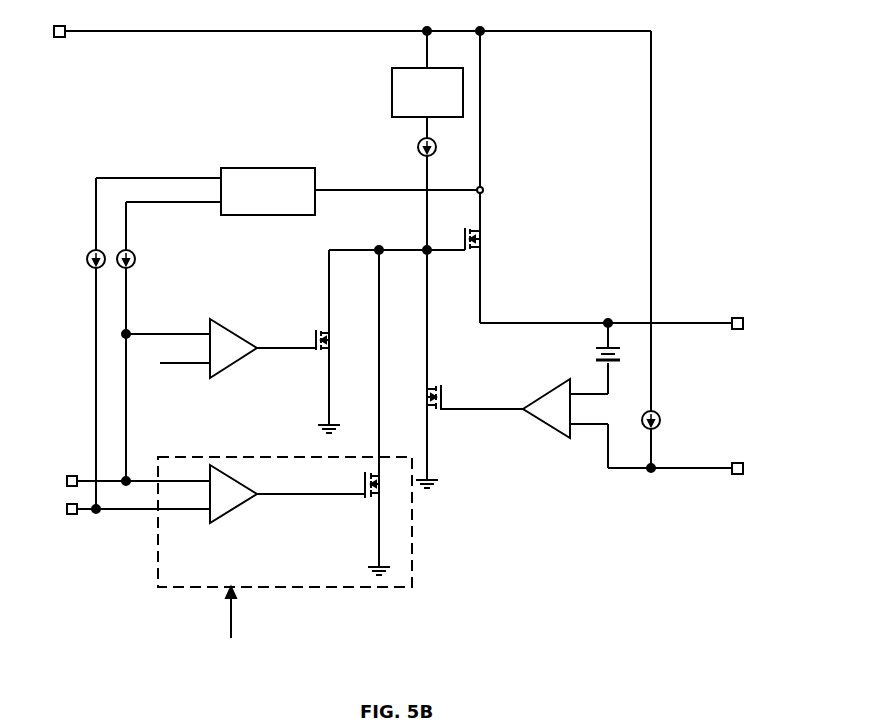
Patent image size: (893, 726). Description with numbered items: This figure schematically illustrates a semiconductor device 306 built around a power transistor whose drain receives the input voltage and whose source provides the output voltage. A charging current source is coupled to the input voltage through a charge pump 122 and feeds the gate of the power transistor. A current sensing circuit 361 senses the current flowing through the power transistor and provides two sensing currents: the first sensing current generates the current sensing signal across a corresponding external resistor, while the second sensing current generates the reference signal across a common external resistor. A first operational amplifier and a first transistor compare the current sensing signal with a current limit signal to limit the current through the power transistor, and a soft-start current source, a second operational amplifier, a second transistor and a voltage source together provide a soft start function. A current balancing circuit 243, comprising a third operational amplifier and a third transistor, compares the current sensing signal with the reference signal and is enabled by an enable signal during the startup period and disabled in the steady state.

The semiconductor device 306 is at (703, 84).
The charge pump 122 is at (398, 118).
The current sensing circuit 361 is at (234, 217).
The current balancing circuit 243 is at (182, 590).